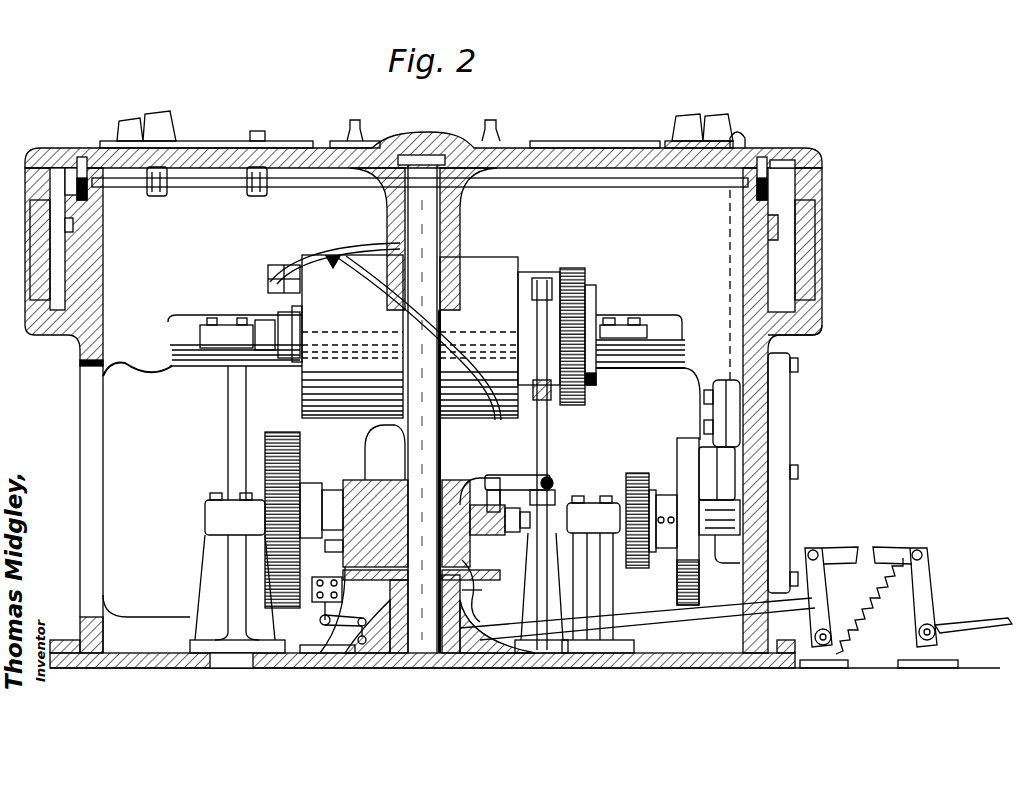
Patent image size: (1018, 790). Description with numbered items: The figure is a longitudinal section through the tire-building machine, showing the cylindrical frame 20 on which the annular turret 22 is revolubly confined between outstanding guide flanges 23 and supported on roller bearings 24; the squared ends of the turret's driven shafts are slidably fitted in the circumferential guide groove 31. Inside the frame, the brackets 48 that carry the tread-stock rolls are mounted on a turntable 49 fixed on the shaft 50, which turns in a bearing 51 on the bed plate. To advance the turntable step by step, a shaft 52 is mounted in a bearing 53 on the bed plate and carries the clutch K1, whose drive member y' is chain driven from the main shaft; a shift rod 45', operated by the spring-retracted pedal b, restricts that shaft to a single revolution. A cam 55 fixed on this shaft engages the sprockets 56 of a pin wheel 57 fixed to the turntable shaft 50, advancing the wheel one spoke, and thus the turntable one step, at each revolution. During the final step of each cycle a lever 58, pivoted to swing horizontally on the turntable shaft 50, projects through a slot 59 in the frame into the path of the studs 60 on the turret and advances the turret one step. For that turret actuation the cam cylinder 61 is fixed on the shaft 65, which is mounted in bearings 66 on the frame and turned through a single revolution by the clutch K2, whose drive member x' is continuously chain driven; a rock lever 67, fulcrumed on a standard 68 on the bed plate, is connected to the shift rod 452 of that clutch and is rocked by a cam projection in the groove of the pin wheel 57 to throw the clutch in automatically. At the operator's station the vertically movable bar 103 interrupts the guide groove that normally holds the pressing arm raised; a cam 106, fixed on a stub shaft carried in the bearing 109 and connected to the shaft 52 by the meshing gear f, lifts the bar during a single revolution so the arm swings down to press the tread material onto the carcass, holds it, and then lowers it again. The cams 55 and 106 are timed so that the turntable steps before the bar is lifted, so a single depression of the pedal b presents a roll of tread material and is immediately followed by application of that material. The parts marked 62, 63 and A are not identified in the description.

The frame 20 is at (99, 470).
The annular turret 22 is at (823, 280).
The guide flanges 23 is at (792, 166).
The roller bearings 24 is at (824, 327).
The circumferential guide groove 31 is at (36, 223).
The brackets 48 is at (689, 116).
The turntable 49 is at (564, 147).
The vertically movable bar 103 is at (746, 141).
The shaft 50 is at (440, 440).
The bearing 51 is at (362, 620).
The shaft 52 is at (205, 505).
The bearing 53 is at (228, 530).
The cam 55 is at (372, 450).
The sprockets 56 is at (345, 552).
The pin wheel 57 is at (463, 482).
The lever 58 is at (358, 262).
The slot 59 is at (267, 289).
The studs 60 is at (283, 268).
The cam cylinder 61 is at (479, 262).
The drum 62 is at (352, 336).
The key 63 is at (331, 254).
The shaft 65 is at (510, 300).
The bearings 66 is at (666, 315).
The rock lever 67 is at (551, 480).
The standard 68 is at (560, 622).
The cam 106 is at (686, 440).
The bearing 109 is at (786, 502).
The shift rod 45' is at (324, 615).
The shift rod 452 is at (549, 405).
The drive member x' is at (576, 323).
The drive member y' is at (282, 507).
The clutch K1 is at (358, 500).
The clutch K2 is at (596, 295).
The gear f is at (637, 473).
The pedal lever A is at (882, 607).
The pedal b is at (973, 616).